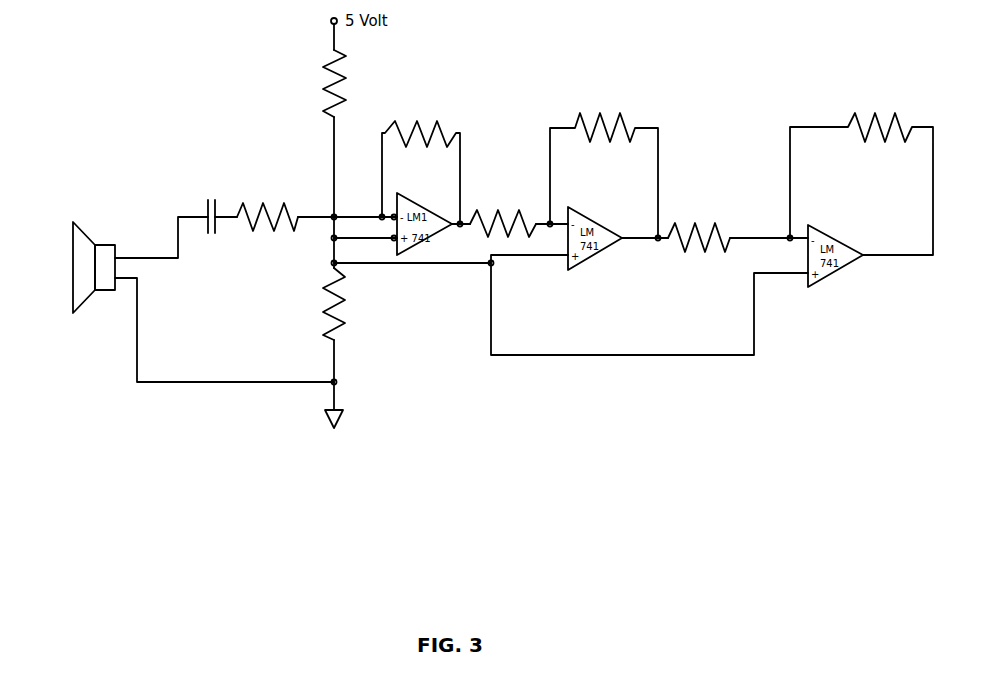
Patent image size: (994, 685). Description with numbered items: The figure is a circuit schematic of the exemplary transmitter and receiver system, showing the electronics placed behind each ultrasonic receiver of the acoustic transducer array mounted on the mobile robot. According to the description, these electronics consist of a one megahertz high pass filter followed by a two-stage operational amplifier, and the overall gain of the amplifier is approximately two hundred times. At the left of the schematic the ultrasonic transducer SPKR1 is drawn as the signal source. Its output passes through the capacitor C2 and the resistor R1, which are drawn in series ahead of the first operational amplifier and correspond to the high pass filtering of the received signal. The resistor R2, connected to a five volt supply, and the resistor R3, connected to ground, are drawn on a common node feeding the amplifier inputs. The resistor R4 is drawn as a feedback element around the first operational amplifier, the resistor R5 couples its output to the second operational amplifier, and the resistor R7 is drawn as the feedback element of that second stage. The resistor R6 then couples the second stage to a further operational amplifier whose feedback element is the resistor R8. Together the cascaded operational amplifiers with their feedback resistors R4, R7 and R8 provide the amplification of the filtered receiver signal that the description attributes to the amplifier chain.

The speaker (40 kΩ) SPKR1 is at (67, 267).
The capacitor (10 pF) C2 is at (210, 189).
The resistor (550 Ω) R1 is at (267, 188).
The resistor (10 kΩ) R2 is at (310, 83).
The resistor (10 kΩ) R3 is at (357, 304).
The feedback resistor (1 kΩ) R4 is at (421, 146).
The resistor (1 kΩ) R5 is at (503, 201).
The resistor (1 kΩ) R6 is at (699, 215).
The feedback resistor (10 kΩ) R7 is at (604, 148).
The feedback resistor (10 kΩ) R8 is at (861, 156).